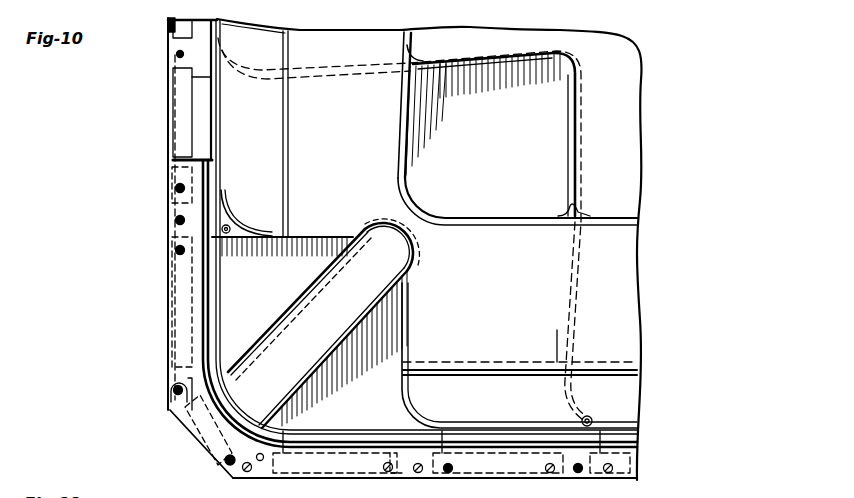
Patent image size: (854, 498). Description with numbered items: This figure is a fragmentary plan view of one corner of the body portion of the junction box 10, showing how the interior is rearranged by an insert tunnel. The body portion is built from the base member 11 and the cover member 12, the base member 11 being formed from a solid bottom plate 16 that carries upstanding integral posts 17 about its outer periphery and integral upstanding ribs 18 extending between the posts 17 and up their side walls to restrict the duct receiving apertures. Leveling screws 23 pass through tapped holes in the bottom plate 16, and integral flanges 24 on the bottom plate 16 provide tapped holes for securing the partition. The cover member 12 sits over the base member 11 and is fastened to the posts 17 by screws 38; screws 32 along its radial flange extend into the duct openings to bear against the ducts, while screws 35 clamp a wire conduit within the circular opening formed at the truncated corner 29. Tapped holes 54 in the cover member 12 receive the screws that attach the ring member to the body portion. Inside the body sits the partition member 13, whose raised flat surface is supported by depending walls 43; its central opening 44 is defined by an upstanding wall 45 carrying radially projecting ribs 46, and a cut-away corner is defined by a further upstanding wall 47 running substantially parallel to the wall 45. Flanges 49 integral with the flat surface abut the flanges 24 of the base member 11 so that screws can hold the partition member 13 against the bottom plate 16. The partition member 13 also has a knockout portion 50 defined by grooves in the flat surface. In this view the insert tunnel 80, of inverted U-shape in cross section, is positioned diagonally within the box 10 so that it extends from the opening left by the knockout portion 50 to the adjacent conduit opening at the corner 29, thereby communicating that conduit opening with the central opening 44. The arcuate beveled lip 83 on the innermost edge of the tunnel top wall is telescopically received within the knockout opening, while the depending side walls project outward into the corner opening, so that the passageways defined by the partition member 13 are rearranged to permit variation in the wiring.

The junction box 10 is at (637, 182).
The base member 11 is at (196, 117).
The cover member 12 is at (513, 471).
The partition member 13 is at (625, 265).
The bottom plate 16 is at (215, 325).
The posts 17 is at (174, 62).
The ribs 18 is at (205, 137).
The leveling screws 23 is at (172, 390).
The flanges 24 is at (221, 240).
The truncated corner 29 is at (178, 420).
The screws 32 is at (174, 187).
The screws 35 is at (228, 470).
The screws 38 is at (174, 220).
The depending walls 43 is at (313, 77).
The central opening 44 is at (571, 117).
The upstanding wall 45 is at (405, 120).
The radially projecting ribs 46 is at (423, 58).
The upstanding wall 47 is at (230, 228).
The flanges 49 is at (238, 258).
The knockout portion 50 is at (413, 249).
The tapped holes 54 is at (262, 462).
The insert tunnel 80 is at (317, 353).
The beveled lip 83 is at (405, 225).